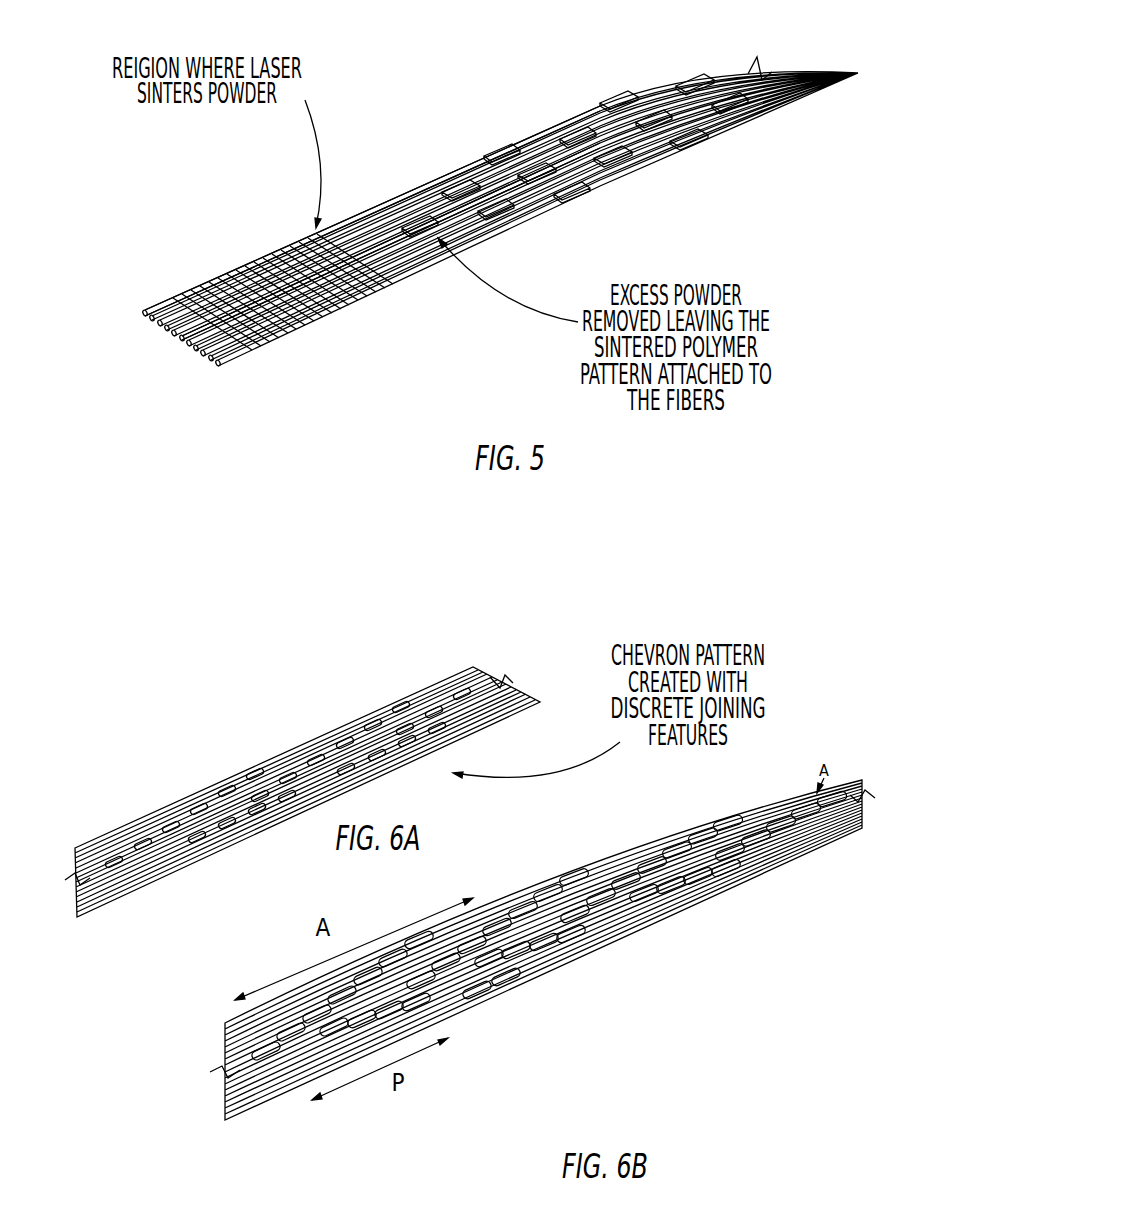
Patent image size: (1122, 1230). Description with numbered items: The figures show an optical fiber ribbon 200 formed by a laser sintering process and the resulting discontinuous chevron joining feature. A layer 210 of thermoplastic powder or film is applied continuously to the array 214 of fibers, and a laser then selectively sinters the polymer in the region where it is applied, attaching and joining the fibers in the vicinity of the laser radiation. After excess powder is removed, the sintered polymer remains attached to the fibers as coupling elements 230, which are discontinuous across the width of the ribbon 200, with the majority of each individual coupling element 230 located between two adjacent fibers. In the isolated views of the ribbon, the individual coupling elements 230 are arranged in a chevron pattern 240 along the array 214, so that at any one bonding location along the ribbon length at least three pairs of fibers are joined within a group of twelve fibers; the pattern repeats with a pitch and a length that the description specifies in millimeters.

In FIG. 5, the ribbon 200 is at (458, 105).
In FIG. 5, the layer of thermoplastic powder 210 is at (216, 270).
In FIG. 5, the array of fibers 214 is at (424, 270).
In FIG. 6A, the array of fibers 214 is at (323, 710).
In FIG. 6B, the array of fibers 214 is at (728, 880).
In FIG. 5, the coupling elements 230 is at (615, 157).
In FIG. 6A, the coupling elements 230 is at (203, 817).
In FIG. 6B, the coupling elements 230 is at (797, 814).
In FIG. 6B, the chevron pattern 240 is at (490, 990).